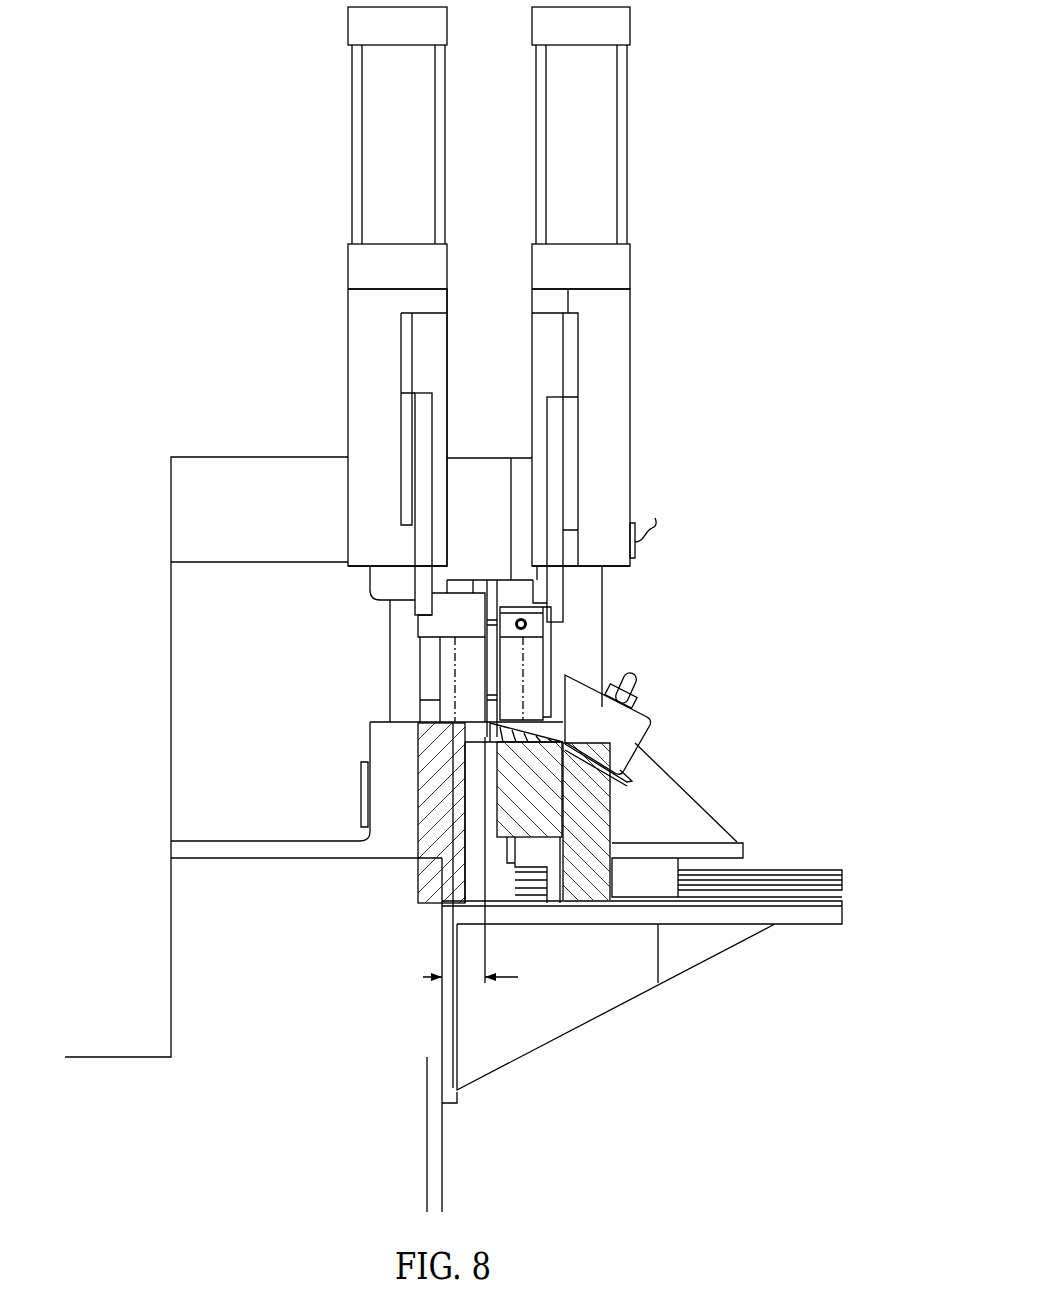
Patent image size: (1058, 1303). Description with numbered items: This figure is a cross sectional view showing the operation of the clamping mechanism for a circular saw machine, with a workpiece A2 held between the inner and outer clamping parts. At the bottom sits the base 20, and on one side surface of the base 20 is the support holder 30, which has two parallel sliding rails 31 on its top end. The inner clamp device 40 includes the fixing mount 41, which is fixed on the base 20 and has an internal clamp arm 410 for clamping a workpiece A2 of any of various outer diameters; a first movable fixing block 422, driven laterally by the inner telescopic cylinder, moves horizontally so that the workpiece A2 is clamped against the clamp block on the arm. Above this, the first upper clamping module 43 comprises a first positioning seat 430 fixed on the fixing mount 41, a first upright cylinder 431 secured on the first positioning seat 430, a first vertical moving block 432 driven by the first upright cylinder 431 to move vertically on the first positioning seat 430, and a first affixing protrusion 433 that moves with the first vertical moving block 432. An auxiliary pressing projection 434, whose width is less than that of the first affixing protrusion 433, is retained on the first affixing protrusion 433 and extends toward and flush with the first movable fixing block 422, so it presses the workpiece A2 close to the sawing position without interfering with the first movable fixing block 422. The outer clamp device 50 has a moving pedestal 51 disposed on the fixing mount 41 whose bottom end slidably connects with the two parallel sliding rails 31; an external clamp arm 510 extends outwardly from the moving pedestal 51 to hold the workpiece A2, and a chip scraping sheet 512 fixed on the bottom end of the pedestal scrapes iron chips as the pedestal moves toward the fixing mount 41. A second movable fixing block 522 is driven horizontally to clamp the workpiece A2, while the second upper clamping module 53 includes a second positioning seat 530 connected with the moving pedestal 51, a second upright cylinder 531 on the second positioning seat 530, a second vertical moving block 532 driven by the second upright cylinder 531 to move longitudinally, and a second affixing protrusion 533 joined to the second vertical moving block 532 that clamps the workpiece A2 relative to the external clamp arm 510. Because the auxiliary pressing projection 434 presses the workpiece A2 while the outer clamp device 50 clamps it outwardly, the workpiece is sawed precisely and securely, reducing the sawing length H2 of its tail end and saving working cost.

The base 20 is at (435, 1145).
The support holder 30 is at (732, 918).
The parallel sliding rails 31 is at (828, 888).
The inner clamp device 40 is at (256, 346).
The fixing mount 41 is at (190, 500).
The first upper clamping module 43 is at (345, 148).
The first positioning seat 430 is at (352, 366).
The first upright cylinder 431 is at (372, 130).
The first vertical moving block 432 is at (405, 435).
The first affixing protrusion 433 is at (425, 483).
The auxiliary pressing projection 434 is at (422, 626).
The internal clamp arm 410 is at (430, 748).
The first movable fixing block 422 is at (445, 707).
The workpieces A2 is at (457, 673).
The outer clamp device 50 is at (699, 271).
The moving pedestal 51 is at (600, 604).
The second upper clamping module 53 is at (641, 148).
The second positioning seat 530 is at (612, 353).
The second upright cylinder 531 is at (600, 116).
The second vertical moving block 532 is at (573, 427).
The second affixing protrusion 533 is at (553, 510).
The second movable fixing block 522 is at (535, 657).
The external clamp arm 510 is at (535, 817).
The chip scraping sheet 512 is at (525, 858).
The sawing length H2 is at (462, 961).